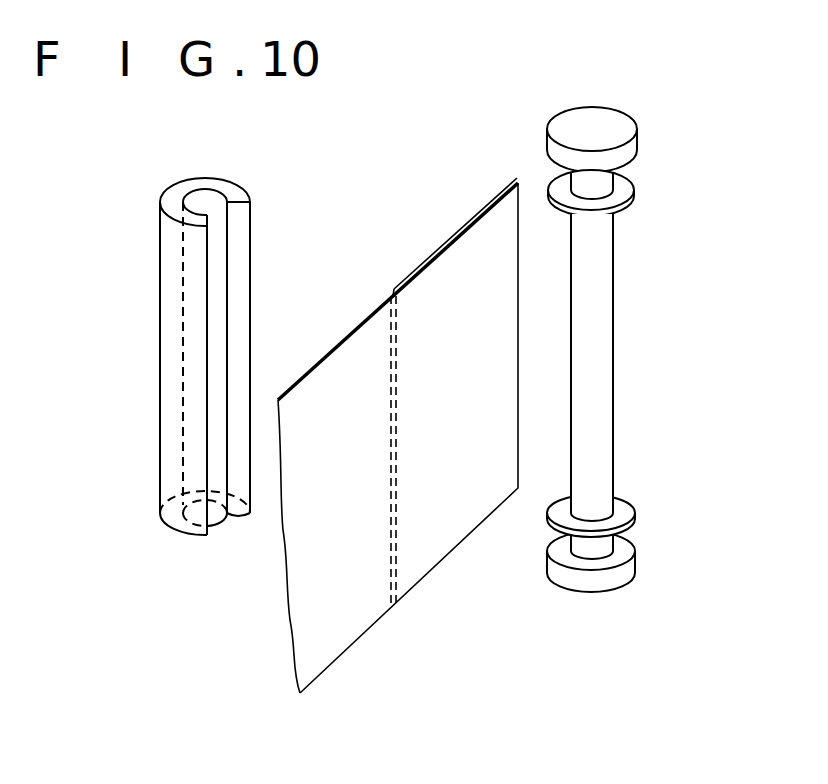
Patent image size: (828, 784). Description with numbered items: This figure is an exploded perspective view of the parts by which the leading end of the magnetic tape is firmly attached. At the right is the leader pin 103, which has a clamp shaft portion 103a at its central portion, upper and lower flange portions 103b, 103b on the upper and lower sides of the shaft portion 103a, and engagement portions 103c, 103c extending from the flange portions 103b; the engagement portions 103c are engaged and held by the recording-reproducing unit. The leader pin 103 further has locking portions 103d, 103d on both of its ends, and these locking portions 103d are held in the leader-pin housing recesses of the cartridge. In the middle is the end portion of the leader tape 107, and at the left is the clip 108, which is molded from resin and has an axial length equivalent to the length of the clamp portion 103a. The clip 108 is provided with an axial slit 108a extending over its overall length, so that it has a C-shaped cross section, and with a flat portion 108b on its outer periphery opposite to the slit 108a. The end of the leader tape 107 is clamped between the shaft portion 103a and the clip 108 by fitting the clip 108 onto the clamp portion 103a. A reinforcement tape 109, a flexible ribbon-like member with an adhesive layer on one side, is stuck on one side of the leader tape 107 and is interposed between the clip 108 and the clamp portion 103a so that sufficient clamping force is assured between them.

The leader pin 103 is at (587, 363).
The clamp shaft portion 103a is at (610, 350).
The flange portion 103b is at (627, 203).
The engagement portion 103c is at (603, 180).
The locking portion 103d is at (550, 128).
The leader tape 107 is at (360, 327).
The clip 108 is at (191, 340).
The axial slit 108a is at (220, 347).
The flat portion 108b is at (172, 193).
The reinforcement tape 109 is at (450, 238).